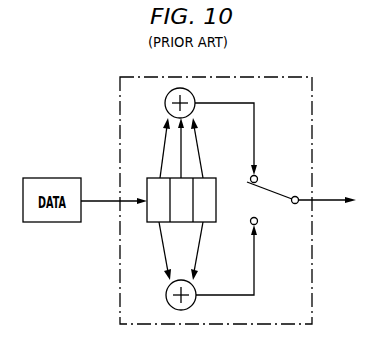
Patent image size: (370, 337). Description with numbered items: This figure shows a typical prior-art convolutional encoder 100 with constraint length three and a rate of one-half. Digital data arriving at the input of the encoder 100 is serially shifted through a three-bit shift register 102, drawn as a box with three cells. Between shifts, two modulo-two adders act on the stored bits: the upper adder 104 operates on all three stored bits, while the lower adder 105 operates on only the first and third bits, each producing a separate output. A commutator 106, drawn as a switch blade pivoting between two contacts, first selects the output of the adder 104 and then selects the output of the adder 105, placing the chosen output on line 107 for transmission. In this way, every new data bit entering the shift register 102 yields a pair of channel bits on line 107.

The encoder 100 is at (293, 317).
The three-bit shift register 102 is at (211, 178).
The modulo-2 adder 104 is at (167, 102).
The modulo-2 adder 105 is at (167, 295).
The commutator 106 is at (269, 188).
The line 107 is at (318, 186).